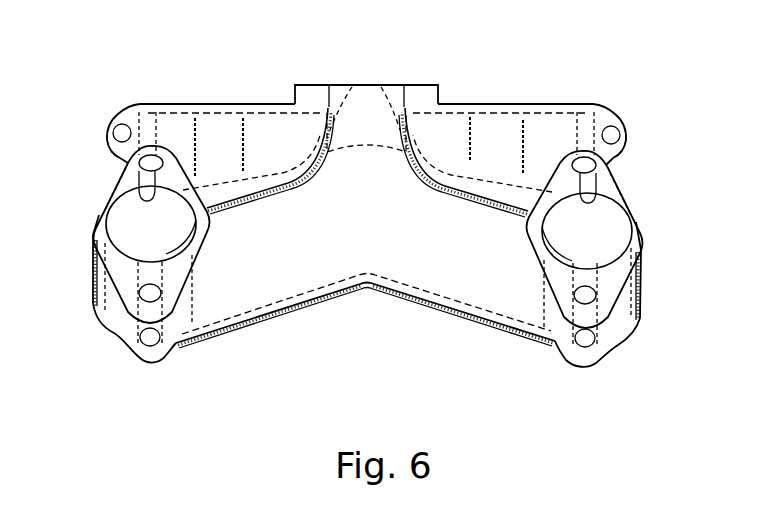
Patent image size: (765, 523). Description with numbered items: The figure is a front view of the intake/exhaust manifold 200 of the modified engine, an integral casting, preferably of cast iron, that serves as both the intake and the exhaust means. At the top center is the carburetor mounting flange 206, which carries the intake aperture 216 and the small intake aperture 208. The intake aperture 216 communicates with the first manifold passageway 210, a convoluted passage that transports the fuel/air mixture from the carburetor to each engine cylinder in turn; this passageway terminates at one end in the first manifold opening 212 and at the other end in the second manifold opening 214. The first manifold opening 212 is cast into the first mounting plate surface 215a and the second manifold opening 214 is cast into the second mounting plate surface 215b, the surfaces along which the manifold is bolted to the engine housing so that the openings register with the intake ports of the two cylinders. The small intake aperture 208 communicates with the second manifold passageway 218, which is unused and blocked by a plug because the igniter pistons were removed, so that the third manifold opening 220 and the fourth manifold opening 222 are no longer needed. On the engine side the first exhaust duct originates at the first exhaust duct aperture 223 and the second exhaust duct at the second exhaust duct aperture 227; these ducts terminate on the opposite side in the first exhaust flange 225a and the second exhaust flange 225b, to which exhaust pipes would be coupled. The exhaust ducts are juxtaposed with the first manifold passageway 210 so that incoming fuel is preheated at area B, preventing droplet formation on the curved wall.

The intake/exhaust manifold 200 is at (598, 55).
The carburetor mounting flange 206 is at (413, 85).
The small intake aperture 208 is at (353, 85).
The intake aperture 216 is at (387, 85).
The first mounting plate surface 215a is at (188, 103).
The second mounting plate surface 215b is at (532, 103).
The second manifold passageway 218 is at (486, 143).
The third manifold opening 220 is at (130, 112).
The fourth manifold opening 222 is at (591, 128).
The first exhaust flange 225a is at (98, 203).
The second exhaust flange 225b is at (643, 243).
The preheating area B is at (170, 238).
The first exhaust duct aperture 223 is at (97, 306).
The second exhaust duct aperture 227 is at (641, 314).
The first manifold passageway 210 is at (410, 279).
The first manifold opening 212 is at (217, 330).
The second manifold opening 214 is at (531, 324).